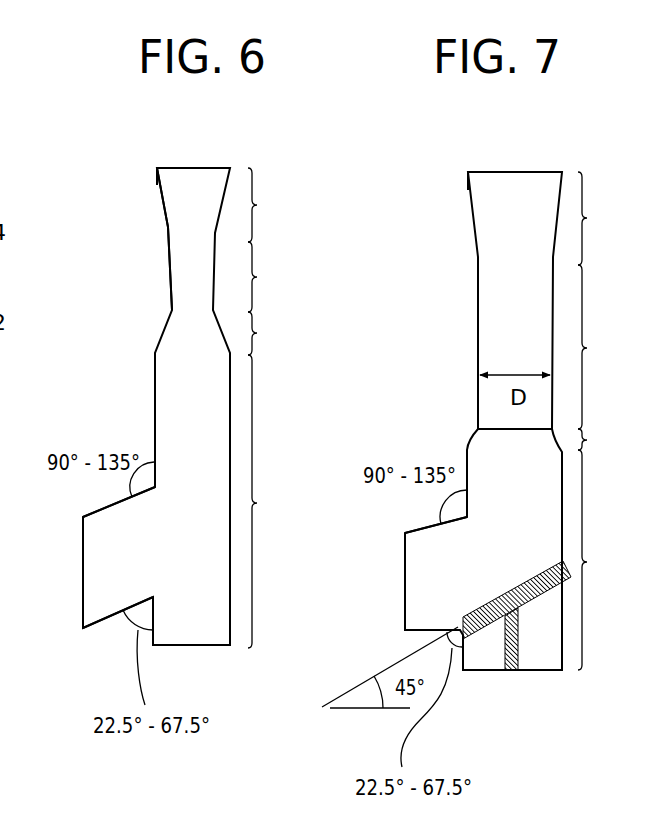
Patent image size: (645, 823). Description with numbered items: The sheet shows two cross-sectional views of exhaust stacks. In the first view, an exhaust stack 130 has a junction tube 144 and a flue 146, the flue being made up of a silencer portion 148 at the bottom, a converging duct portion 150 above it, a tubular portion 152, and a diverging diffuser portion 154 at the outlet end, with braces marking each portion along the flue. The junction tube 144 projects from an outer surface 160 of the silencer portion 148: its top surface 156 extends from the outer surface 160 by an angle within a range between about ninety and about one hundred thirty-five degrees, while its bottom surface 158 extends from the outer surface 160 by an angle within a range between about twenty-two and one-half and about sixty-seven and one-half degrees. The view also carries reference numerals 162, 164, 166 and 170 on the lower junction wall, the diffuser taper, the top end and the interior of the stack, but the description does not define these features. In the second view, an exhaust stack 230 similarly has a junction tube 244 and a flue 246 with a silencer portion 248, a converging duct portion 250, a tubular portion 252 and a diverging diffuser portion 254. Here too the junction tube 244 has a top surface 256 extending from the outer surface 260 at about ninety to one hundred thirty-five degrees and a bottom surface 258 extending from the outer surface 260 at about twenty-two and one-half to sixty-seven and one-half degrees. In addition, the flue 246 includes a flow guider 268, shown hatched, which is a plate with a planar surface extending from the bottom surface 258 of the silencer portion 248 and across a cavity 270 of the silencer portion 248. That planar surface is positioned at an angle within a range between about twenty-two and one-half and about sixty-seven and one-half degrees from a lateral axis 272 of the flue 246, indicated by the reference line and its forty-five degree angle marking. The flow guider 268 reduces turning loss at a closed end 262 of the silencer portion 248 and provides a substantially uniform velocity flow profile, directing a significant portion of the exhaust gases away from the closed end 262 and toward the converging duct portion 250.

In FIG. 6, the exhaust stack 130 is at (133, 293).
In FIG. 6, the junction tube 144 is at (83, 628).
In FIG. 6, the flue 146 is at (155, 168).
In FIG. 6, the silencer portion 148 is at (275, 501).
In FIG. 6, the converging duct portion 150 is at (273, 333).
In FIG. 6, the tubular portion 152 is at (273, 277).
In FIG. 6, the diverging diffuser portion 154 is at (273, 205).
In FIG. 6, the top surface 156 is at (105, 508).
In FIG. 6, the bottom surface 158 is at (103, 620).
In FIG. 6, the outer surface 160 is at (155, 442).
In FIG. 6, the lower side wall portion 162 is at (153, 625).
In FIG. 6, the tapered side surface 164 is at (165, 225).
In FIG. 6, the top end surface 166 is at (205, 168).
In FIG. 6, the body interior 170 is at (209, 447).
In FIG. 7, the exhaust stack 230 is at (463, 348).
In FIG. 7, the junction tube 244 is at (405, 630).
In FIG. 7, the flue 246 is at (466, 174).
In FIG. 7, the silencer portion 248 is at (602, 560).
In FIG. 7, the converging duct portion 250 is at (602, 440).
In FIG. 7, the tubular portion 252 is at (602, 347).
In FIG. 7, the diverging diffuser portion 254 is at (602, 218).
In FIG. 7, the top surface 256 is at (418, 530).
In FIG. 7, the bottom surface 258 is at (420, 630).
In FIG. 7, the outer surface 260 is at (467, 460).
In FIG. 7, the closed end 262 is at (465, 672).
In FIG. 7, the flow guider 268 is at (530, 600).
In FIG. 7, the cavity 270 is at (537, 493).
In FIG. 7, the lateral axis 272 is at (322, 710).